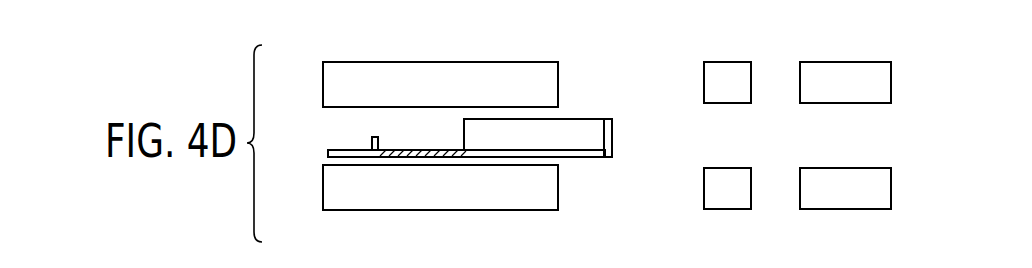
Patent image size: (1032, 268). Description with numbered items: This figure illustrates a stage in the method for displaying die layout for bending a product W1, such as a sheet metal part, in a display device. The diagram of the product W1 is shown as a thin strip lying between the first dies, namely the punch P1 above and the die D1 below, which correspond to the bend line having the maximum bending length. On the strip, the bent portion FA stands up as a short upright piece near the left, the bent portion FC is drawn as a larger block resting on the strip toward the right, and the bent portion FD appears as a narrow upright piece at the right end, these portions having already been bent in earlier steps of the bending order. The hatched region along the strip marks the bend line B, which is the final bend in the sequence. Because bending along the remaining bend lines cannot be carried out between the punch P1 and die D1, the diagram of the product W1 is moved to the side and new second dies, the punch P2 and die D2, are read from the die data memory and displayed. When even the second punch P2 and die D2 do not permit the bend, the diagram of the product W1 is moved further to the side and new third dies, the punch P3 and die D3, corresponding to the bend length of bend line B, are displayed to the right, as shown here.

The punch P1 is at (543, 75).
The die D1 is at (531, 197).
The punch P2 is at (719, 73).
The die D2 is at (724, 195).
The punch P3 is at (882, 80).
The die D3 is at (882, 195).
The product W1 is at (582, 167).
The bend line B is at (426, 158).
The bent portion FA is at (372, 147).
The bent portion FC is at (597, 128).
The bent portion FD is at (613, 133).